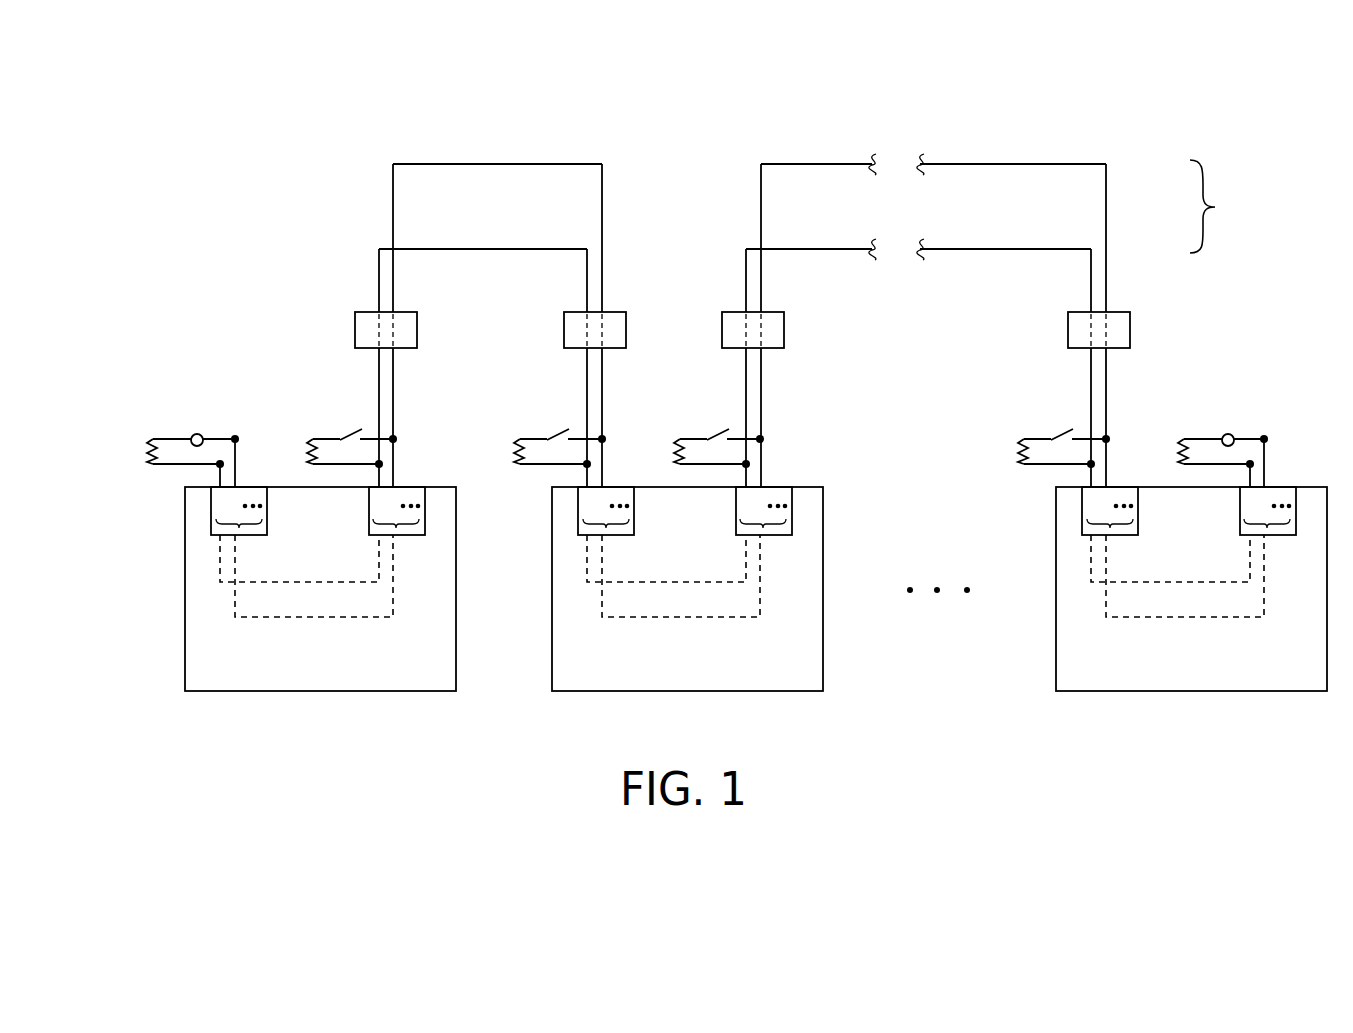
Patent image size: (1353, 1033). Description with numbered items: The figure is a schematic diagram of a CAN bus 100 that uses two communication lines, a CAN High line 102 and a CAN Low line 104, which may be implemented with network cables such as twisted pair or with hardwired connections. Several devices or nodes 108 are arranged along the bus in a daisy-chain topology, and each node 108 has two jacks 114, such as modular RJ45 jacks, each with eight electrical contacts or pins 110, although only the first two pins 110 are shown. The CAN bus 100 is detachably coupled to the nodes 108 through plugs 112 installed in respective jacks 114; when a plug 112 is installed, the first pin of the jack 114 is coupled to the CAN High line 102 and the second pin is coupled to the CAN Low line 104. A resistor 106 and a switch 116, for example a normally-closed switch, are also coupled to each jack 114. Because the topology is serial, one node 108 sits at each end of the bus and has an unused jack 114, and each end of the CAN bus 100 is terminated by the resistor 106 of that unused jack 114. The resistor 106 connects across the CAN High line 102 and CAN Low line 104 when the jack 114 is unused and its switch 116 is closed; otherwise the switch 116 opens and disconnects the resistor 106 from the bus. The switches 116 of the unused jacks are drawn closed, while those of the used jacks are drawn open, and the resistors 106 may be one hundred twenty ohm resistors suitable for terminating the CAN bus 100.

The CAN bus 100 is at (1226, 206).
The CAN High line 102 is at (550, 248).
The CAN Low line 104 is at (565, 163).
The resistor 106 is at (147, 452).
The node 108 is at (271, 692).
The pins 110 is at (240, 528).
The plug 112 is at (405, 311).
The jack 114 is at (211, 515).
The switch 116 is at (201, 435).